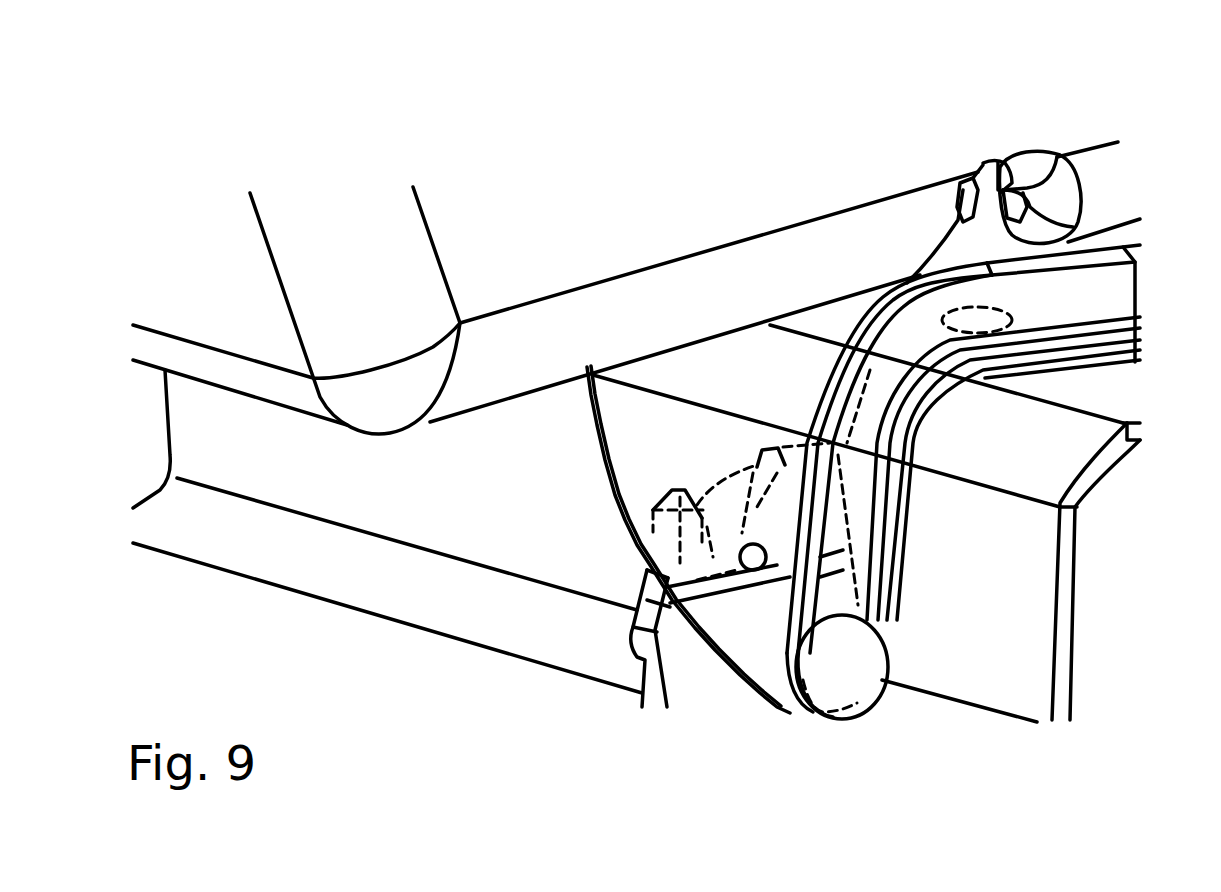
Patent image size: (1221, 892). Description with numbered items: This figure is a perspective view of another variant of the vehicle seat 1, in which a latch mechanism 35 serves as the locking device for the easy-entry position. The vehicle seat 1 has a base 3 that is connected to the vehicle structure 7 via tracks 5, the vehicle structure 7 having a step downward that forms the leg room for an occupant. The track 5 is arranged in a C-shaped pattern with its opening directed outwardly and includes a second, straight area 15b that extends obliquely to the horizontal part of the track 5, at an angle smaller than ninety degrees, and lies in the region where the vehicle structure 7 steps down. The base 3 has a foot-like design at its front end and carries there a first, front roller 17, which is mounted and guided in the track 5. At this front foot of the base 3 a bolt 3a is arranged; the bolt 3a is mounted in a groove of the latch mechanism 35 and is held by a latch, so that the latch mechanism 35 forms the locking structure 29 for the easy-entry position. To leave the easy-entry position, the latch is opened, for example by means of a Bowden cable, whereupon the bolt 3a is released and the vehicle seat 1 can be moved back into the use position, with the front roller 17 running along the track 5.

The vehicle seat 1 is at (172, 131).
The base 3 is at (665, 413).
The bolt 3a is at (722, 557).
The track 5 is at (1113, 293).
The vehicle structure 7 is at (1067, 590).
The second, straight area 15b is at (893, 572).
The first, front roller 17 is at (842, 673).
The locking structure 29 is at (562, 485).
The latch mechanism 35 is at (637, 593).